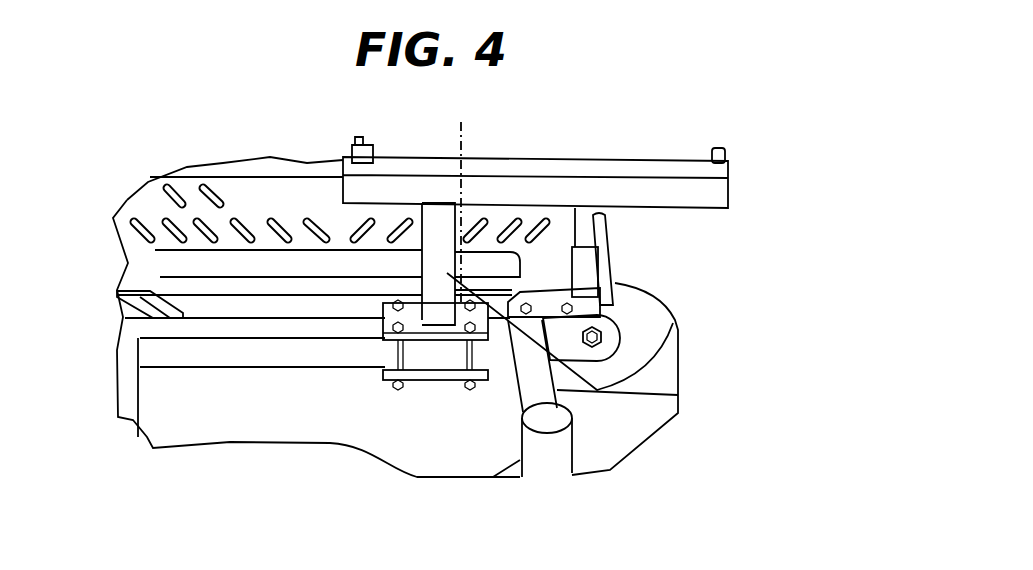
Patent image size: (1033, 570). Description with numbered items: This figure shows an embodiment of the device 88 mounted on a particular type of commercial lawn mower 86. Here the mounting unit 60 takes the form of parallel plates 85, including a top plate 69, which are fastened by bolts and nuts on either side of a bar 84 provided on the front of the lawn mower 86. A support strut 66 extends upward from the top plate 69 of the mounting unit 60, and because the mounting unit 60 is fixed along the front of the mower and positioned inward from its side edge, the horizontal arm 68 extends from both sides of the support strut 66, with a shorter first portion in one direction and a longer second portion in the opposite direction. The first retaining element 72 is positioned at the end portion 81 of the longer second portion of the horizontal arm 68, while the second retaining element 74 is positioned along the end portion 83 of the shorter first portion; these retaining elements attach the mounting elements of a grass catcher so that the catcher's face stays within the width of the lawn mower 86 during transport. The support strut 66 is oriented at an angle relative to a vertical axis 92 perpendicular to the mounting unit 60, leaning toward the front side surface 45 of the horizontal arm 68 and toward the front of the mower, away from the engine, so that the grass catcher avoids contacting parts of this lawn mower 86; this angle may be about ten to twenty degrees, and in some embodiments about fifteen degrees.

The lawn mower 86 is at (175, 130).
The bar 84 is at (163, 330).
The end portion of the first portion 83 is at (335, 185).
The second retaining element 74 is at (360, 137).
The vertical axis 92 is at (472, 133).
The device 88 is at (513, 140).
The horizontal arm 68 is at (608, 145).
The first retaining element 72 is at (722, 148).
The end portion of the second portion 81 is at (738, 197).
The front side surface 45 is at (702, 200).
The top plate 69 is at (390, 320).
The parallel plates 85 is at (450, 377).
The mounting unit 60 is at (373, 352).
The support strut 66 is at (678, 395).